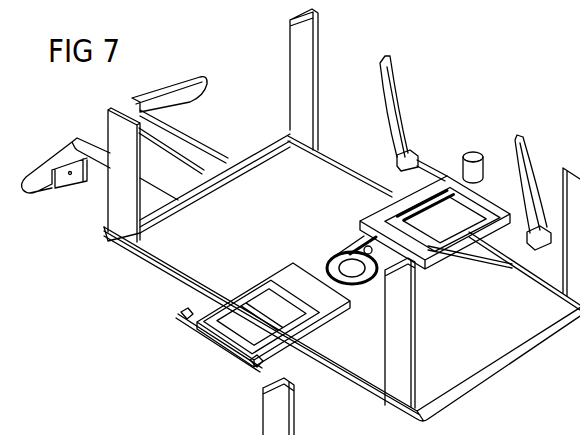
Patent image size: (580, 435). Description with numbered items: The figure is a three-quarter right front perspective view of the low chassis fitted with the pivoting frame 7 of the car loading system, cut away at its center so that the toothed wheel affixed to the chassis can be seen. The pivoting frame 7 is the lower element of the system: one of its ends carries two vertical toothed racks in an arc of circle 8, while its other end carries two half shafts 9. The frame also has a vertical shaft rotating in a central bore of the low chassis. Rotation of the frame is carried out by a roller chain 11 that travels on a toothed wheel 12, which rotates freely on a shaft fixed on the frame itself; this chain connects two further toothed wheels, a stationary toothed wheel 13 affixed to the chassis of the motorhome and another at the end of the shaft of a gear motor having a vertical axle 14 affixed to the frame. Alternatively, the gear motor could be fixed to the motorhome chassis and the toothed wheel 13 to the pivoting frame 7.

The pivoting frame 7 is at (295, 280).
The vertical toothed racks in an arc of circle 8 is at (518, 138).
The half shafts 9 is at (252, 360).
The roller chain 11 is at (355, 247).
The toothed wheel 12 is at (352, 248).
The stationary toothed wheel 13 is at (332, 255).
The gear motor having a vertical axle 14 is at (467, 165).